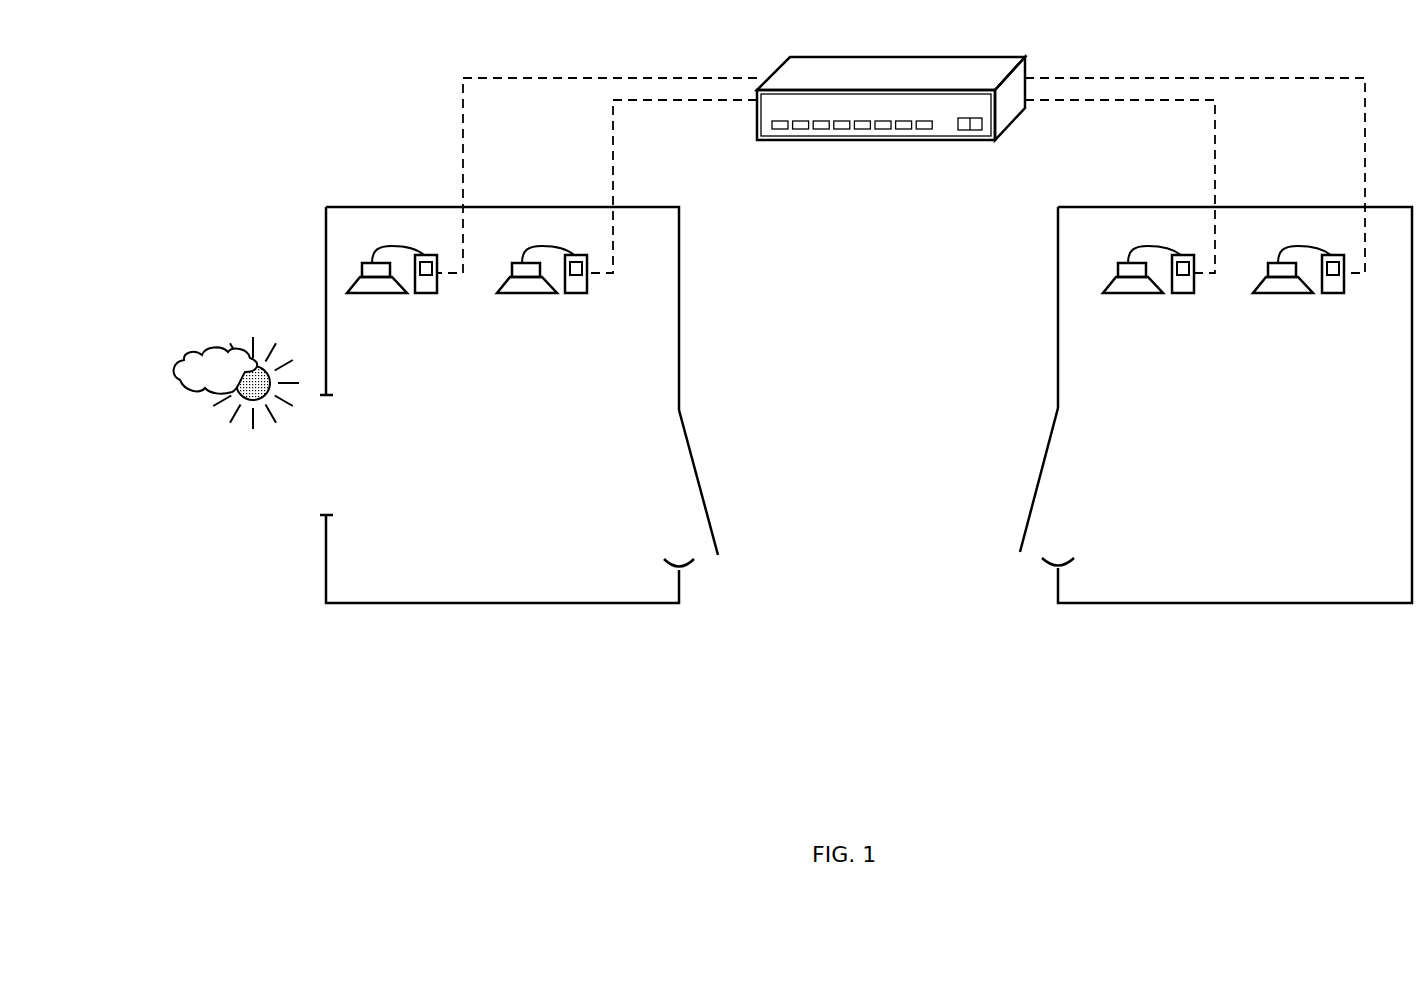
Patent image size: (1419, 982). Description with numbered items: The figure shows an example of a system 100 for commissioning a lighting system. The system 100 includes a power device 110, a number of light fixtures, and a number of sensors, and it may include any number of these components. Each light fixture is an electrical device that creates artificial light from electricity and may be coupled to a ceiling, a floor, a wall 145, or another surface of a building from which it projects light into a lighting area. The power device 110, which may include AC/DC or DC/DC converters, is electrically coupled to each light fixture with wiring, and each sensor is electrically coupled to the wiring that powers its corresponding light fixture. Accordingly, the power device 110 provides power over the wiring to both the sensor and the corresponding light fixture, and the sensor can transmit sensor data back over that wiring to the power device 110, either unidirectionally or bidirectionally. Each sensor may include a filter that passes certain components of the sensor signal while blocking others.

The system 100 is at (1002, 667).
The power device 110 is at (882, 56).
The wall 145 is at (680, 270).